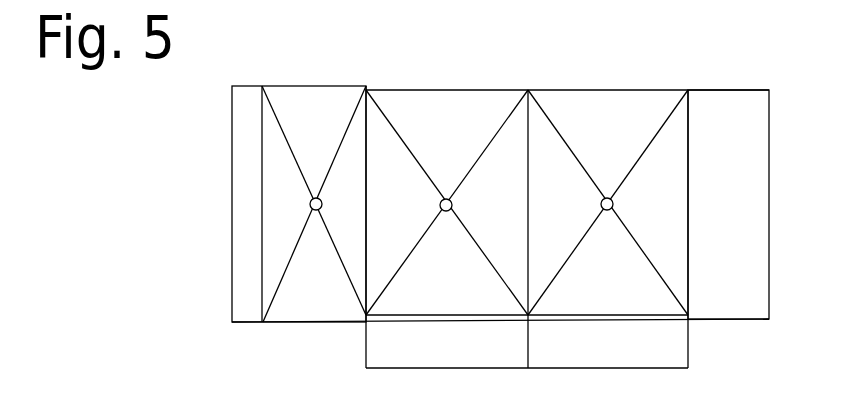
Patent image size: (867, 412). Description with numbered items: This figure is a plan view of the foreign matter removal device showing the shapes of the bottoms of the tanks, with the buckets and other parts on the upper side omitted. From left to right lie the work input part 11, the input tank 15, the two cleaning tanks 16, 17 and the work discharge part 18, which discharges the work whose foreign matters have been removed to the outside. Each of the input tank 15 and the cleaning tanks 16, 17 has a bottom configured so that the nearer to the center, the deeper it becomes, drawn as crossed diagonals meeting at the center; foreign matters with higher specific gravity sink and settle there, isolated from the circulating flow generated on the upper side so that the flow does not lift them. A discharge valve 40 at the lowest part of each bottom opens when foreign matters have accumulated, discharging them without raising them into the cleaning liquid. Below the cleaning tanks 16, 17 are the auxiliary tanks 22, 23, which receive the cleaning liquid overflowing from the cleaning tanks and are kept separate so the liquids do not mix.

The work input part 11 is at (246, 199).
The input tank 15 is at (293, 315).
The cleaning tank 16 is at (413, 305).
The cleaning tank 17 is at (572, 303).
The work discharge part 18 is at (758, 207).
The auxiliary tank 22 is at (441, 356).
The auxiliary tank 23 is at (602, 352).
The discharge valve 40 is at (310, 204).